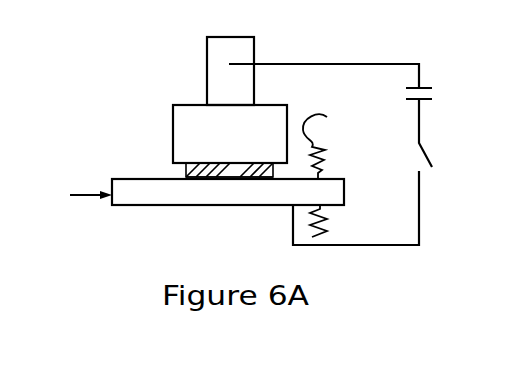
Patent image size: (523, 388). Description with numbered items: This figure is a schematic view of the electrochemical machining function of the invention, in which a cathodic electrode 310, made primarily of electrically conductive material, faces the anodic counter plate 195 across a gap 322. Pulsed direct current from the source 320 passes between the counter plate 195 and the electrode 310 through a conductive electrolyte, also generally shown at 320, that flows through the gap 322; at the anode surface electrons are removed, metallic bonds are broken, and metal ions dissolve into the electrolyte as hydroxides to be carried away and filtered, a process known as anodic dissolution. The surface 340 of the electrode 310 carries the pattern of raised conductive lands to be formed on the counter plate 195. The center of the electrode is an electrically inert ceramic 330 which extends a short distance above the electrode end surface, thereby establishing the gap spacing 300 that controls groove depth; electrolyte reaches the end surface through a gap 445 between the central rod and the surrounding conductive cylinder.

The electrode 310 is at (173, 113).
The surface of electrode 340 is at (178, 168).
The gap 322 is at (192, 172).
The ceramic 330 is at (228, 170).
The gap spacing 300 is at (332, 171).
The source 320 is at (387, 103).
The counter plate 195 is at (344, 191).
The gap 445 is at (522, 369).